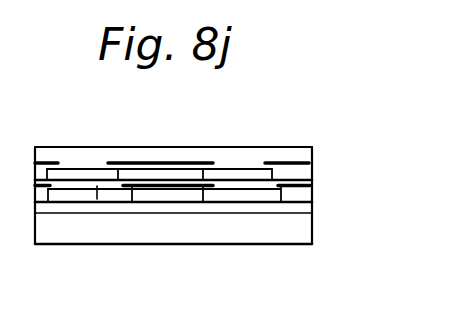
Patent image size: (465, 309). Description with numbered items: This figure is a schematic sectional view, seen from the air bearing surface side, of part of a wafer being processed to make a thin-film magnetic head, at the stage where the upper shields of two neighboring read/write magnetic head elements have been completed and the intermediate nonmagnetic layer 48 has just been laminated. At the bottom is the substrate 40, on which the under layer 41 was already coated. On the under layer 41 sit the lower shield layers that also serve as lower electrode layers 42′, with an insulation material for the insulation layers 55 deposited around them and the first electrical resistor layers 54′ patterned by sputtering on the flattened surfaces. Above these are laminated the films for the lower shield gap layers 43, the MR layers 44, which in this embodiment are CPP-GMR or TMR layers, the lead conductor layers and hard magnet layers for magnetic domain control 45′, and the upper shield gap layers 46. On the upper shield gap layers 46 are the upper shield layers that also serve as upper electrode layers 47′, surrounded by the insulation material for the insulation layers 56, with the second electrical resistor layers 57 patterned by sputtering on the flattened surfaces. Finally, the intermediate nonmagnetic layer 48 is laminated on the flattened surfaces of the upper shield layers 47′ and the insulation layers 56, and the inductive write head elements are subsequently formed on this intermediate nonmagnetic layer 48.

The substrate 40 is at (303, 244).
The under layer 41 is at (300, 232).
The lower shield layers also serving as lower electrode layers 42′ is at (250, 198).
The lower shield gap layers 43 is at (332, 191).
The MR layers 44 is at (208, 159).
The lead conductor layers and hard magnet layers for magnetic domain control 45′ is at (210, 180).
The upper shield gap layers 46 is at (206, 182).
The upper shield layers also serving as upper electrode layers 47′ is at (87, 170).
The intermediate nonmagnetic layer 48 is at (307, 146).
The first electrical resistor layers 54′ is at (34, 193).
The insulation layers 55 is at (300, 208).
The insulation layers 56 is at (45, 175).
The second electrical resistor layers 57 is at (50, 162).